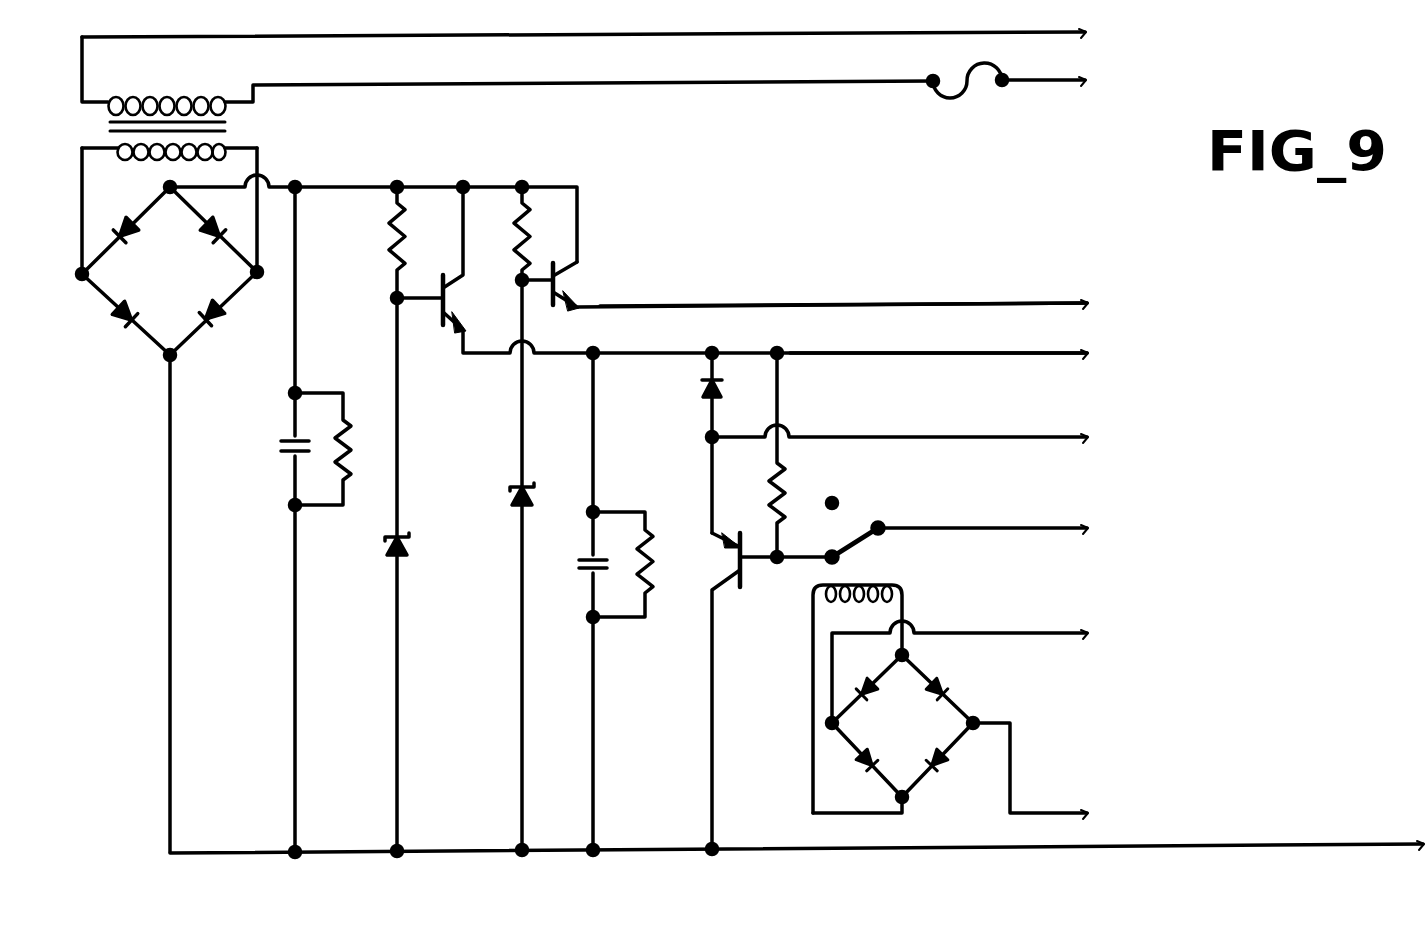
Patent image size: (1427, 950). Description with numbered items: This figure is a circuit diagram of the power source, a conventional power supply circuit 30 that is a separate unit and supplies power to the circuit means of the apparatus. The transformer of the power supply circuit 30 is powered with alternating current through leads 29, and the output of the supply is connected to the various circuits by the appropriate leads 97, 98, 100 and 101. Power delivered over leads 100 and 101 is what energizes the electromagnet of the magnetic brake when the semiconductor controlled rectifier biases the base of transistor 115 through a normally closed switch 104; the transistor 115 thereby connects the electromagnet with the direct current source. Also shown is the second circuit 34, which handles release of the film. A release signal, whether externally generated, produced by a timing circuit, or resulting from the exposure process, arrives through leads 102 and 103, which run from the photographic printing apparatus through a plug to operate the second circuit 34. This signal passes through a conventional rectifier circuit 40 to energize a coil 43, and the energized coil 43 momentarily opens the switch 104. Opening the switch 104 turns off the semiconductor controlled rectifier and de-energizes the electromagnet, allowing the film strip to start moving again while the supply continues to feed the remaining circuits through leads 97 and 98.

The leads 29 is at (1090, 36).
The power supply circuit 30 is at (582, 487).
The second circuit 34 is at (982, 691).
The rectifier circuit 40 is at (926, 784).
The coil 43 is at (880, 585).
The lead 97 is at (798, 858).
The lead 98 is at (867, 289).
The lead 100 is at (932, 422).
The lead 101 is at (970, 339).
The lead 102 is at (992, 663).
The lead 103 is at (1061, 771).
The normally closed switch 104 is at (860, 527).
The transistor 115 is at (731, 583).